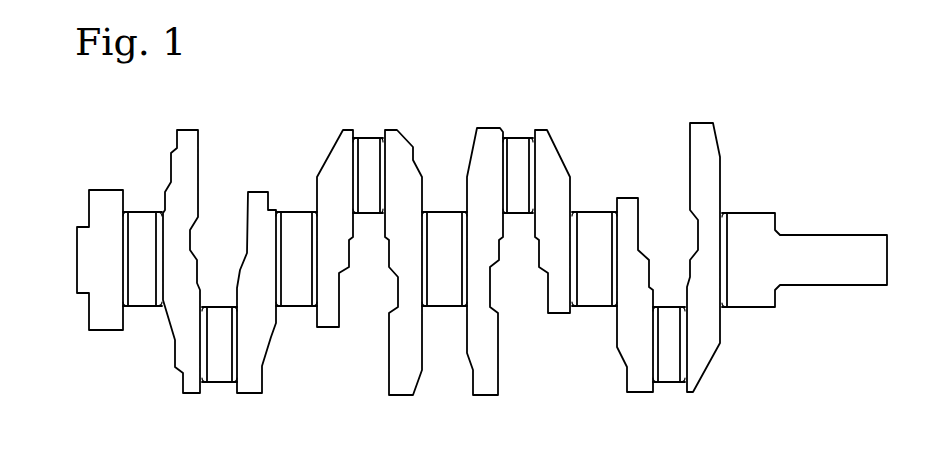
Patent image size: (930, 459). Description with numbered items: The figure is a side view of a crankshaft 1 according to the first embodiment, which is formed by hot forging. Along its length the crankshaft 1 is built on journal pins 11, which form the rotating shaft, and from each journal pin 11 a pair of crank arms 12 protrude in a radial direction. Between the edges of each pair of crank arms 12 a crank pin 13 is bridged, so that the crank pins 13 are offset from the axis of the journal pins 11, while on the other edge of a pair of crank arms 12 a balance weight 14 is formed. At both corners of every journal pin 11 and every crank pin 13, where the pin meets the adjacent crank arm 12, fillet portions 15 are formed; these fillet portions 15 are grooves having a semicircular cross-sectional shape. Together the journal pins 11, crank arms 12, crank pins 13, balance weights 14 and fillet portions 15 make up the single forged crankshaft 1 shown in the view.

The crankshaft 1 is at (738, 132).
The journal pin 11 is at (147, 298).
The crank arm 12 is at (343, 152).
The crank pin 13 is at (365, 147).
The balance weight 14 is at (188, 177).
The fillet portion 15 is at (160, 212).